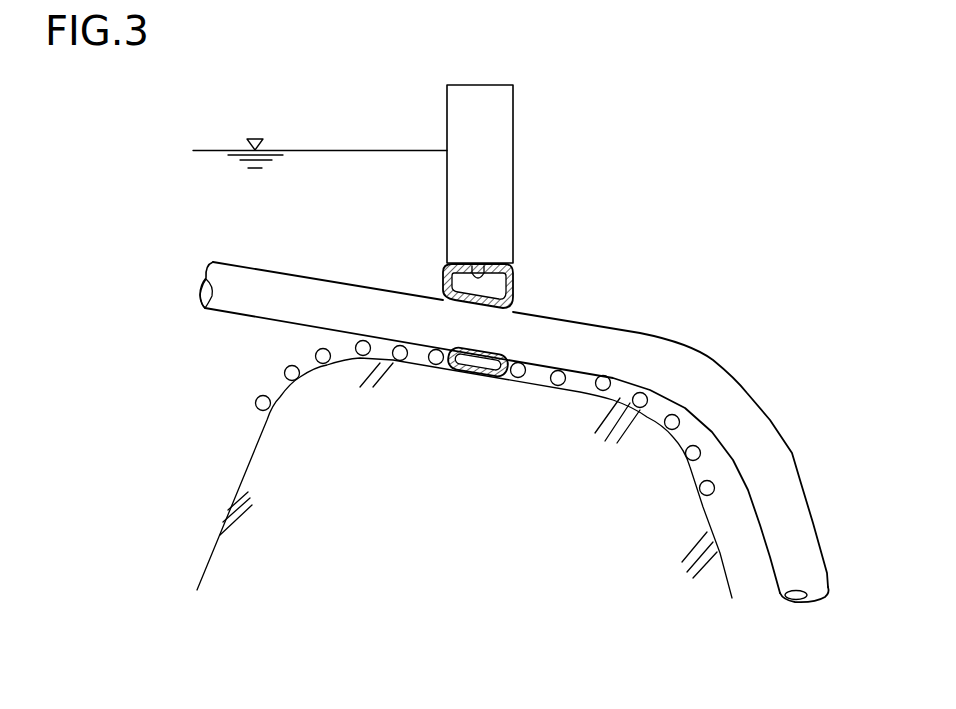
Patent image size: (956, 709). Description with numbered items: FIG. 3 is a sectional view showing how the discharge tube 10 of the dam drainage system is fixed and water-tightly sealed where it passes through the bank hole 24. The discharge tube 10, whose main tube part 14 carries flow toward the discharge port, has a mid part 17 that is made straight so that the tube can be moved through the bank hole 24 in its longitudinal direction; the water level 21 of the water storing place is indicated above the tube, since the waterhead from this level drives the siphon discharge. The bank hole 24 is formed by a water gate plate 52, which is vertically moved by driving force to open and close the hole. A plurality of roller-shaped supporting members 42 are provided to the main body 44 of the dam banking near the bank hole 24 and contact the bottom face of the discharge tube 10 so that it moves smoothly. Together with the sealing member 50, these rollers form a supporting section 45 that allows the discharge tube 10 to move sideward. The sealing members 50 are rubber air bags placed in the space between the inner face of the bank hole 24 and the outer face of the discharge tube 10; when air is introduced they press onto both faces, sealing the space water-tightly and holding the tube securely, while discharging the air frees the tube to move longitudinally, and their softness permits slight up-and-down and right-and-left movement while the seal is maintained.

The discharge tube 10 is at (393, 290).
The main tube part 14 is at (223, 272).
The mid part 17 is at (292, 278).
The water level 21 is at (348, 150).
The bank hole 24 is at (485, 266).
The roller-shaped supporting members 42 is at (609, 380).
The main body 44 is at (632, 435).
The supporting section 45 is at (802, 281).
The sealing member 50 is at (513, 291).
The water gate plate 52 is at (497, 140).